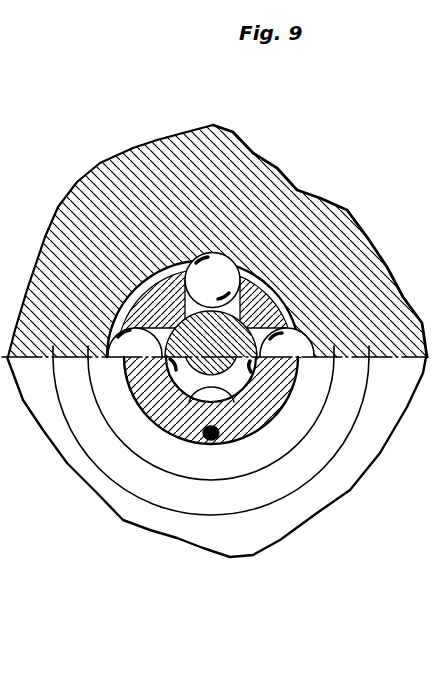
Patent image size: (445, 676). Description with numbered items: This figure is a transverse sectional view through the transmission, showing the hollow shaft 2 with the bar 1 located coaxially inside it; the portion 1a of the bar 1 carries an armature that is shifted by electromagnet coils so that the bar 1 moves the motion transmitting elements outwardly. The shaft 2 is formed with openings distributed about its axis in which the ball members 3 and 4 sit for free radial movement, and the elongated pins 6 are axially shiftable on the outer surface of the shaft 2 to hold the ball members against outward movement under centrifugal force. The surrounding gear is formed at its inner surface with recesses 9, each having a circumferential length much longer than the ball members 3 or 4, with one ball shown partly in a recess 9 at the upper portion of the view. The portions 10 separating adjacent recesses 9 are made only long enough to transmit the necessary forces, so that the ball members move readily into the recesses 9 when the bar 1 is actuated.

The bar 1 is at (200, 366).
The portion of the bar 1a is at (268, 303).
The shaft 2 is at (265, 413).
The ball members 3 is at (204, 392).
The ball members 4 is at (223, 265).
The elongated pins 6 is at (208, 440).
The recesses 9 is at (128, 307).
The portion of the drive element 10 is at (176, 283).